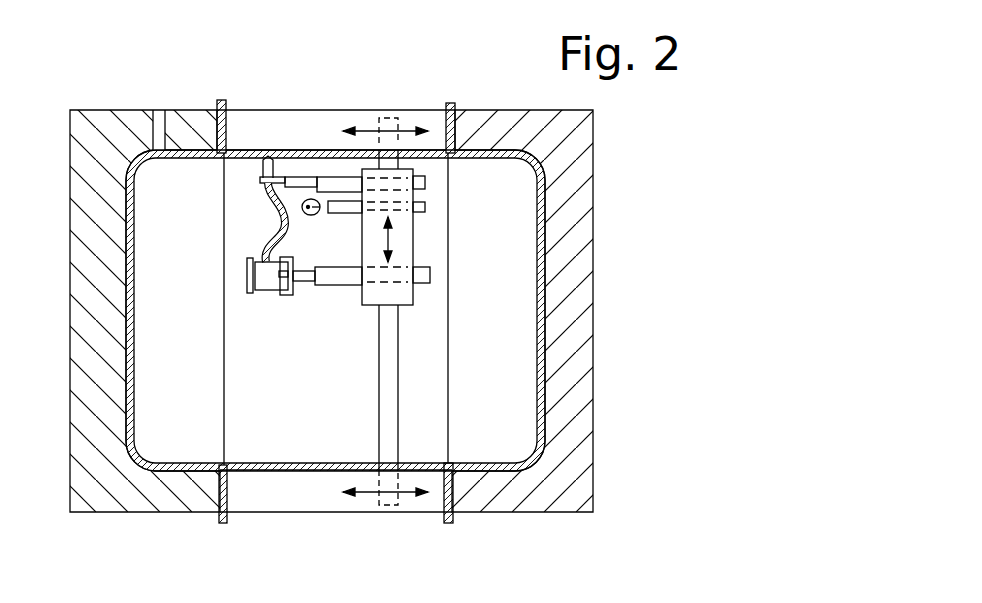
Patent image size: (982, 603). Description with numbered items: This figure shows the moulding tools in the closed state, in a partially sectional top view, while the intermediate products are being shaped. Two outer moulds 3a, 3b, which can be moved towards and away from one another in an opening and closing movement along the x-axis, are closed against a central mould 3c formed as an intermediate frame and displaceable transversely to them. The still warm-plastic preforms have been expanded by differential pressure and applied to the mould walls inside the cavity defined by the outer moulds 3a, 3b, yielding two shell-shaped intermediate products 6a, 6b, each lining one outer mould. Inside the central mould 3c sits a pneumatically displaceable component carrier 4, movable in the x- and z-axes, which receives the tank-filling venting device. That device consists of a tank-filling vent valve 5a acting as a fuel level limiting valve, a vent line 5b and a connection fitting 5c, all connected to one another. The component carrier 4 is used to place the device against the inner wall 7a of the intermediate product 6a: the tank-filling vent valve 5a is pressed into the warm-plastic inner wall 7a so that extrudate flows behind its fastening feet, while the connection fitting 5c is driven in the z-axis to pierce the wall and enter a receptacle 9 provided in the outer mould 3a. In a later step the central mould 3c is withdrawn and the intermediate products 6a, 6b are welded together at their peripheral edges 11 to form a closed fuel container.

The outer mould 3a is at (125, 487).
The outer mould 3b is at (547, 488).
The central mould 3c is at (410, 108).
The component carrier 4 is at (405, 243).
The tank-filling vent valve 5a is at (266, 290).
The vent line 5b is at (273, 226).
The connection fitting 5c is at (270, 168).
The intermediate product 6a is at (130, 408).
The intermediate product 6b is at (537, 237).
The inner wall 7a is at (141, 300).
The receptacle 9 is at (159, 110).
The peripheral edges 11 is at (228, 107).